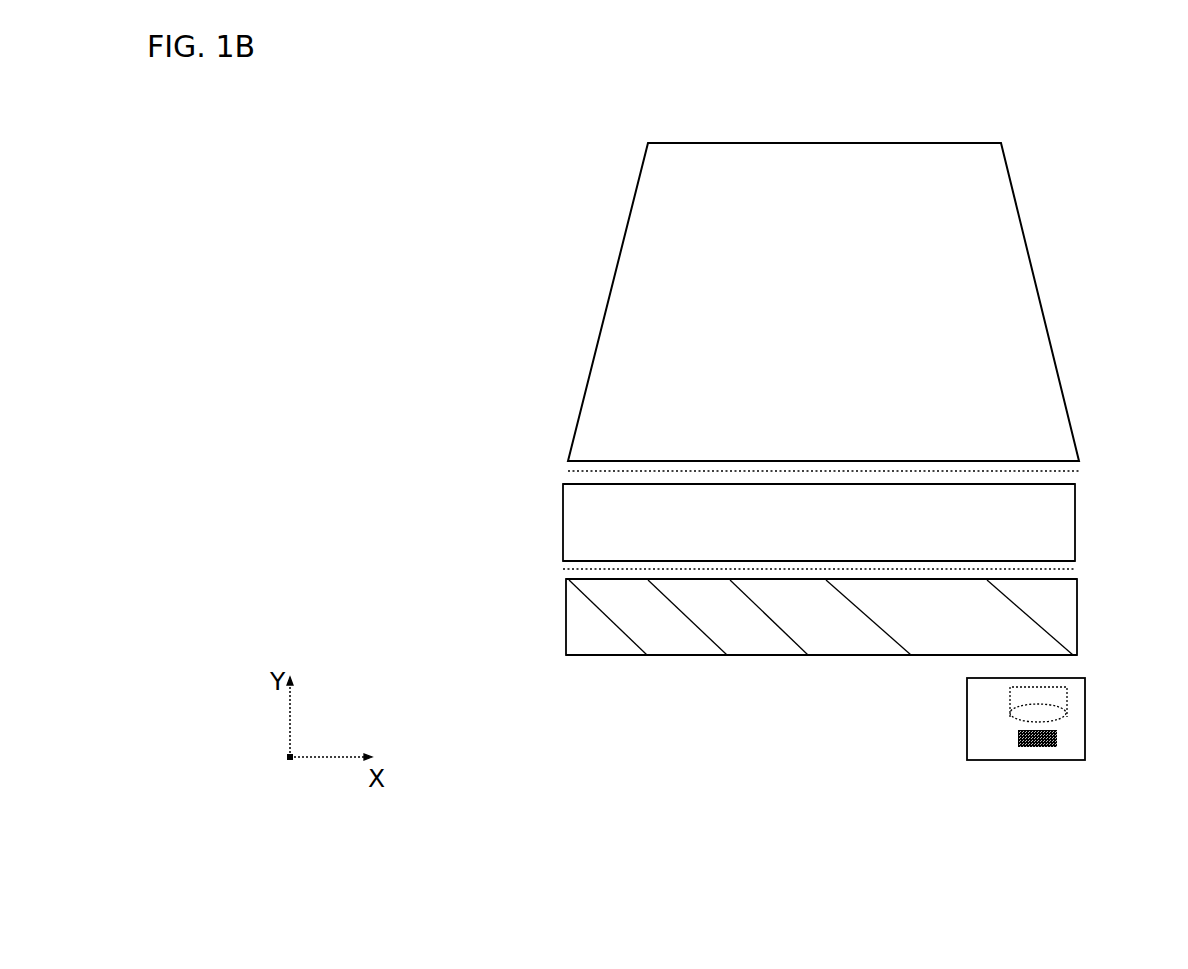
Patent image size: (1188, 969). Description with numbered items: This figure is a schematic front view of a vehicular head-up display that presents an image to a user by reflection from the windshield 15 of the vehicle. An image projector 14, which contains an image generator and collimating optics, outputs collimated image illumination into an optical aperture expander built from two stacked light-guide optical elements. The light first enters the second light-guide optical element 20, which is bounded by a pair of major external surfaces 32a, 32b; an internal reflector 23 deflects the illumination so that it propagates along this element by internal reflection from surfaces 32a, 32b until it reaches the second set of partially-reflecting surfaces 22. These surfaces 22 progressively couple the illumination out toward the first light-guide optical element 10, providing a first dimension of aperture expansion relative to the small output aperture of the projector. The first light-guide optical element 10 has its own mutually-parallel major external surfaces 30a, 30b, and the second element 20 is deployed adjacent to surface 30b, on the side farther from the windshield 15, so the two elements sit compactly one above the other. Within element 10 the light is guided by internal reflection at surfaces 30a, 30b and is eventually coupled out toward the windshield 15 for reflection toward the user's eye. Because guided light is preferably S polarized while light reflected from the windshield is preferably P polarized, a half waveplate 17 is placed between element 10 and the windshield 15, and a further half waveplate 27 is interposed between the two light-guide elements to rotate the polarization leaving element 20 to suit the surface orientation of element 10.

The first light-guide optical element 10 is at (552, 496).
The image projector 14 is at (1026, 734).
The windshield 15 is at (823, 302).
The half waveplate 17 is at (799, 469).
The second light-guide optical element 20 is at (551, 625).
The second set of partially-reflecting surfaces 22 is at (846, 620).
The internal reflector 23 is at (1039, 621).
The half waveplate 27 is at (796, 566).
The major external surface 30a is at (1053, 483).
The major external surface 30b is at (1065, 565).
The major external surface 32a is at (595, 578).
The major external surface 32b is at (575, 658).